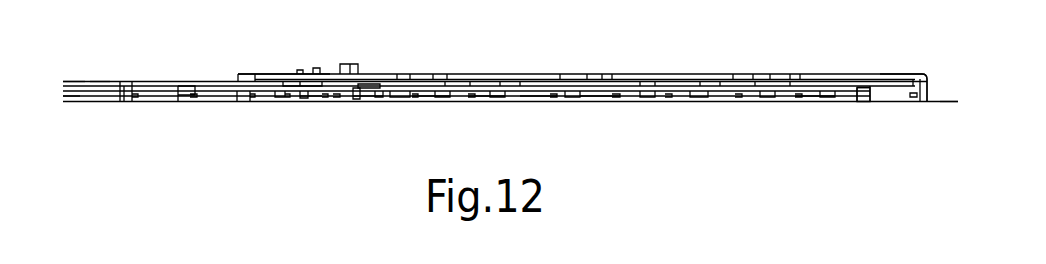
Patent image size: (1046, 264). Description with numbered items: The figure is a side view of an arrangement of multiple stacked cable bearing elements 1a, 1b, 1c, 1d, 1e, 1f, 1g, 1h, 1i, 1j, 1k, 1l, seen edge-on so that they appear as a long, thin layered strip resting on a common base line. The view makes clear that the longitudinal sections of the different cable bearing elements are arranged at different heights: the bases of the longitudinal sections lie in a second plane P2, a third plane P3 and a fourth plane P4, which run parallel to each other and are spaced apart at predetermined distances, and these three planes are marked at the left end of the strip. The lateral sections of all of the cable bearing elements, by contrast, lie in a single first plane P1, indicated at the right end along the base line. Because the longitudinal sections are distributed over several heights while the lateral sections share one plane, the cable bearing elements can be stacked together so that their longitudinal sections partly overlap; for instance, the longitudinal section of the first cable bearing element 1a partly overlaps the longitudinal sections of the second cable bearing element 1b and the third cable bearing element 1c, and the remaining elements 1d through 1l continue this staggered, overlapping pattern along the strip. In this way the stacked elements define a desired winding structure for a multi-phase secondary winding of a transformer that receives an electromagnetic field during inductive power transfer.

The first cable bearing element 1a is at (132, 80).
The second cable bearing element 1b is at (205, 92).
The third cable bearing element 1c is at (267, 80).
The cable bearing element 1d is at (312, 103).
The cable bearing element 1e is at (368, 103).
The cable bearing element 1f is at (428, 103).
The cable bearing element 1g is at (480, 103).
The cable bearing element 1h is at (535, 102).
The cable bearing element 1i is at (593, 103).
The cable bearing element 1j is at (806, 101).
The cable bearing element 1k is at (867, 100).
The cable bearing element 1l is at (897, 73).
The first plane P1 is at (947, 102).
The second plane P2 is at (70, 97).
The third plane P3 is at (72, 83).
The fourth plane P4 is at (97, 80).